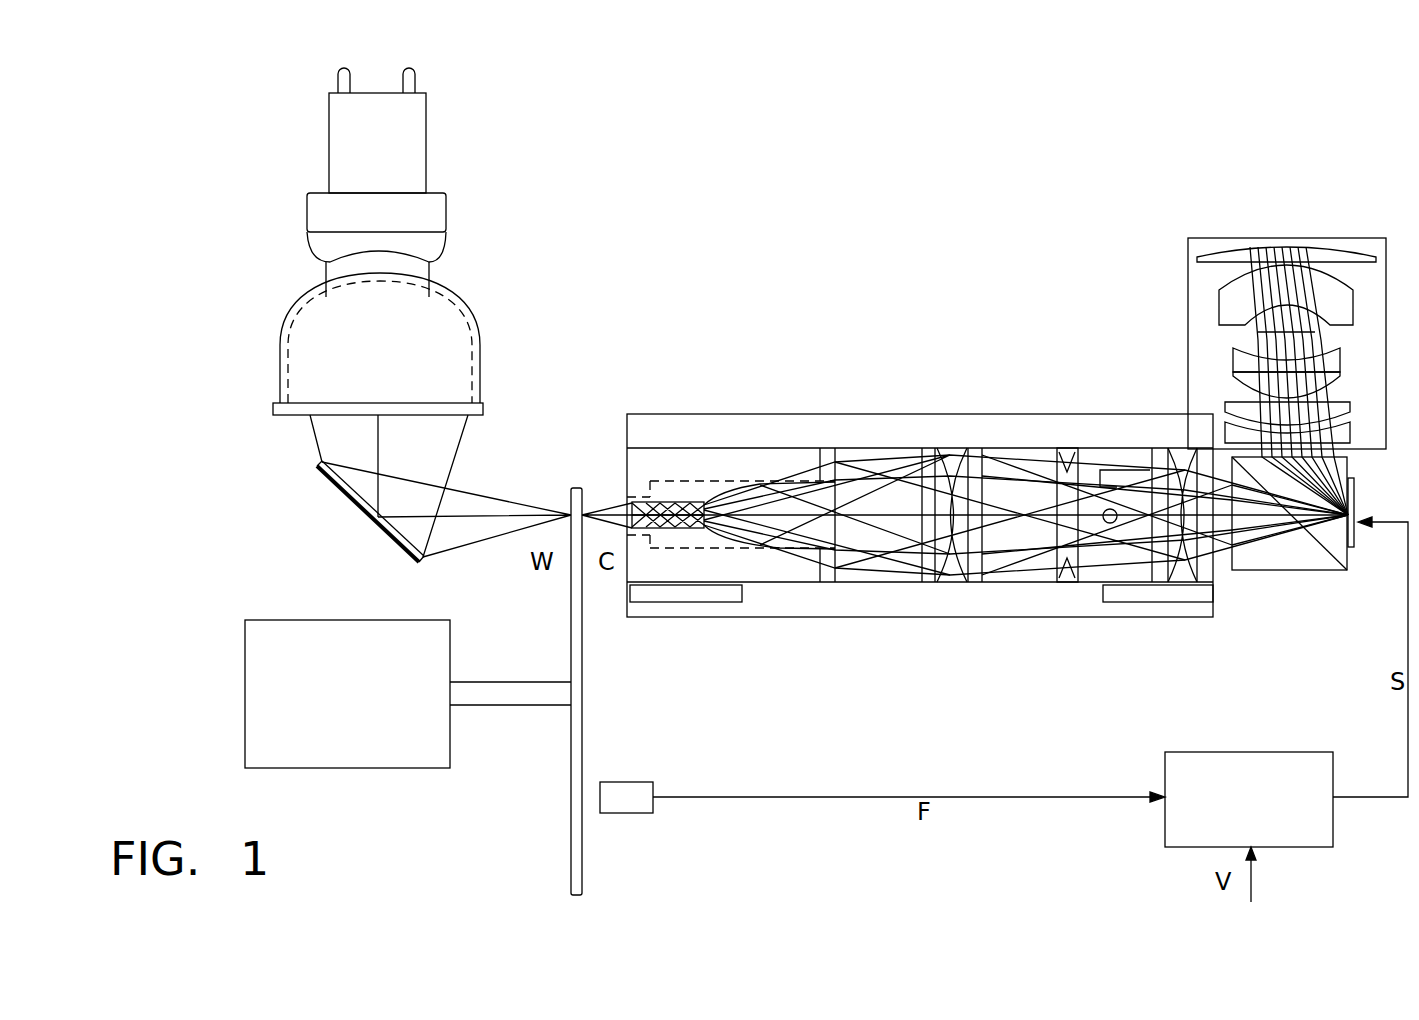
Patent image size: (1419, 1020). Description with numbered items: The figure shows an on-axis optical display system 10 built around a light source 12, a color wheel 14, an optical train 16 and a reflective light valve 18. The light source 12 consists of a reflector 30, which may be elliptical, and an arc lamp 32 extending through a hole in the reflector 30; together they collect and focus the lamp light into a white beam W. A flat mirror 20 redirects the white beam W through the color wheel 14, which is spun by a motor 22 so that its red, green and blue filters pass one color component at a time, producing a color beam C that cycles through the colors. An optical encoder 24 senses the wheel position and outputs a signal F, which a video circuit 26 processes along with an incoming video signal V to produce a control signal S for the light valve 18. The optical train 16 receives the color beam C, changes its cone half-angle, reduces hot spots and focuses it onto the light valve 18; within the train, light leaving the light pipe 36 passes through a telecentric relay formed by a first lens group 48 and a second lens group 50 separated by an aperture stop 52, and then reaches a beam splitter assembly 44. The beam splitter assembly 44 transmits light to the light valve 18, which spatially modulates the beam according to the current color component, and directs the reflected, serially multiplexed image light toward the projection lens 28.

The optical display system 10 is at (955, 258).
The light source 12 is at (266, 319).
The color wheel 14 is at (568, 809).
The optical train 16 is at (1003, 626).
The reflective light valve 18 is at (1356, 501).
The flat mirror 20 is at (345, 499).
The motor 22 is at (318, 768).
The optical encoder 24 is at (622, 813).
The video circuit 26 is at (1163, 783).
The projection lens 28 is at (1188, 293).
The reflector 30 is at (447, 303).
The arc lamp 32 is at (450, 214).
The light pipe 36 is at (744, 476).
The beam splitter assembly 44 is at (1305, 570).
The first lens group 48 is at (950, 455).
The second lens group 50 is at (1185, 575).
The aperture stop 52 is at (1065, 462).